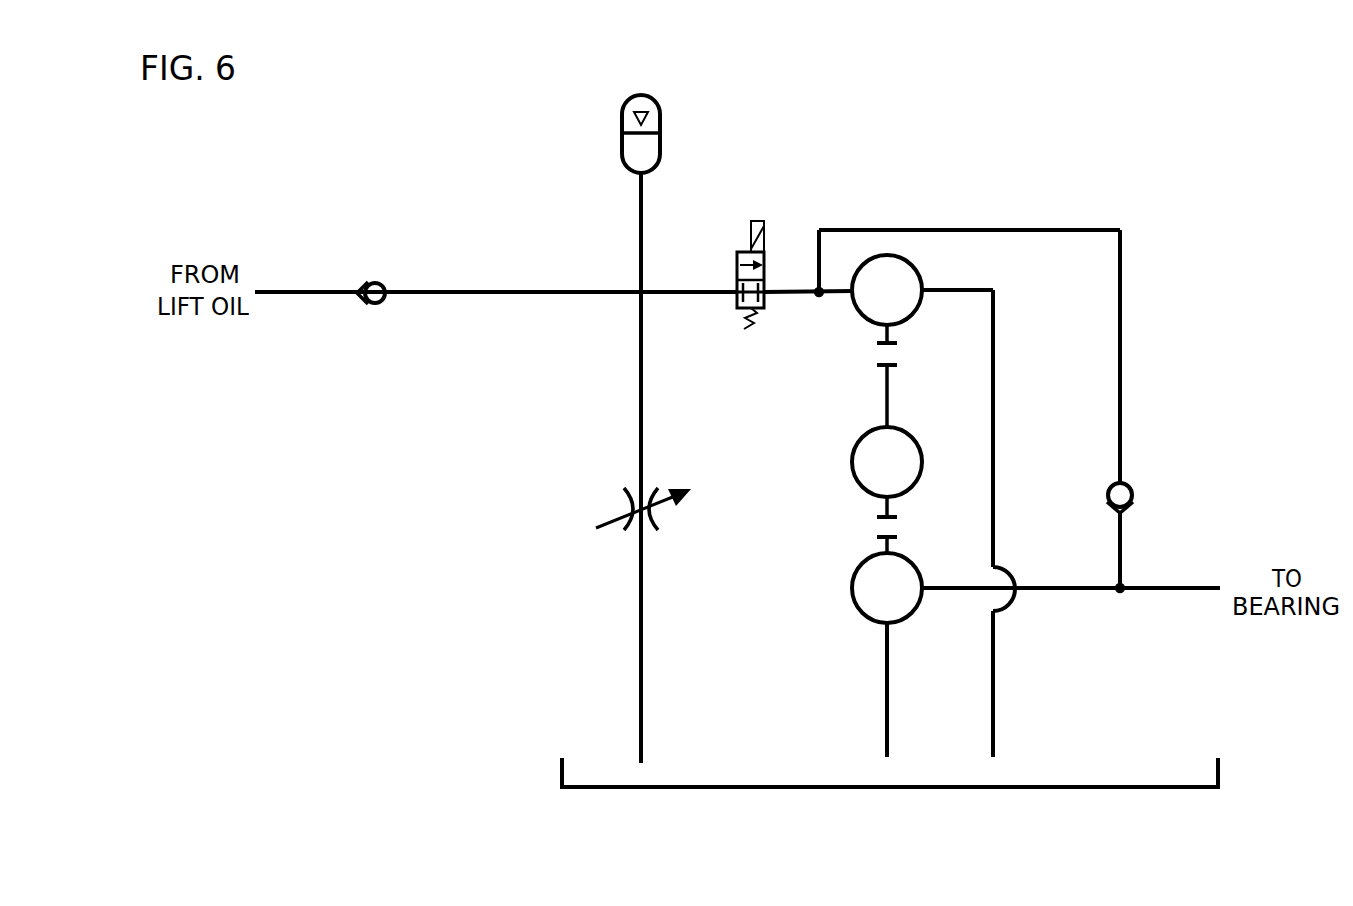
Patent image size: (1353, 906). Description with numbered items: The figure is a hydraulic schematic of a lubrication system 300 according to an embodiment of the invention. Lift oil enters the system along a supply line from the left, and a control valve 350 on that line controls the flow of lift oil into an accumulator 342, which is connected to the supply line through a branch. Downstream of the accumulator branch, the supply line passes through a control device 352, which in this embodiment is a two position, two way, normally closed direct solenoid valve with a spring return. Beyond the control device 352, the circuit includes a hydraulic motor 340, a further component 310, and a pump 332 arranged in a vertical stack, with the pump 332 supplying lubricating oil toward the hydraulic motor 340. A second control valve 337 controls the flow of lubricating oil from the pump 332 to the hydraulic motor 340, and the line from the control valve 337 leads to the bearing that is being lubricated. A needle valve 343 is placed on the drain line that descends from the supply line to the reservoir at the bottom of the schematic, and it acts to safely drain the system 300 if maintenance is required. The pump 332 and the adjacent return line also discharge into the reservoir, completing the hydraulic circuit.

The lubrication system 300 is at (1196, 180).
The filter / flow component 310 is at (908, 477).
The pump 332 is at (908, 603).
The control valve 337 is at (1135, 497).
The hydraulic motor 340 is at (908, 305).
The accumulator 342 is at (622, 160).
The needle valve 343 is at (615, 518).
The control valve 350 is at (381, 302).
The control device 352 is at (747, 329).